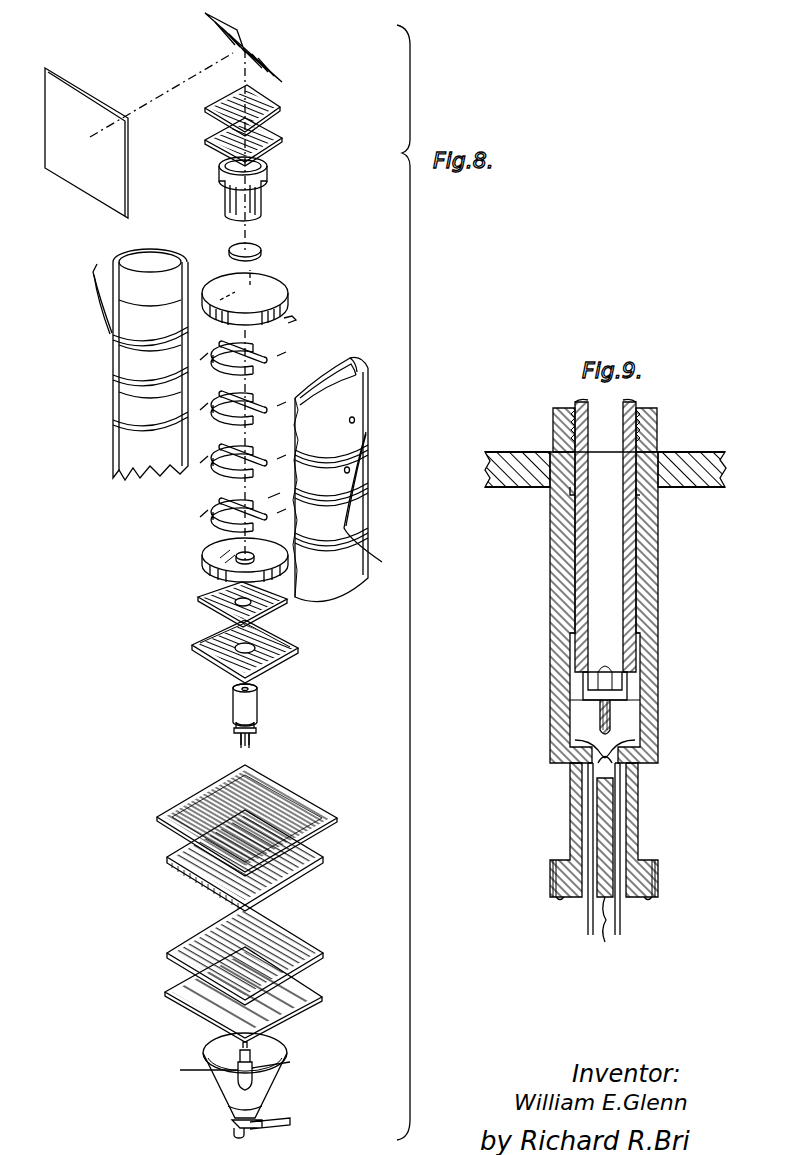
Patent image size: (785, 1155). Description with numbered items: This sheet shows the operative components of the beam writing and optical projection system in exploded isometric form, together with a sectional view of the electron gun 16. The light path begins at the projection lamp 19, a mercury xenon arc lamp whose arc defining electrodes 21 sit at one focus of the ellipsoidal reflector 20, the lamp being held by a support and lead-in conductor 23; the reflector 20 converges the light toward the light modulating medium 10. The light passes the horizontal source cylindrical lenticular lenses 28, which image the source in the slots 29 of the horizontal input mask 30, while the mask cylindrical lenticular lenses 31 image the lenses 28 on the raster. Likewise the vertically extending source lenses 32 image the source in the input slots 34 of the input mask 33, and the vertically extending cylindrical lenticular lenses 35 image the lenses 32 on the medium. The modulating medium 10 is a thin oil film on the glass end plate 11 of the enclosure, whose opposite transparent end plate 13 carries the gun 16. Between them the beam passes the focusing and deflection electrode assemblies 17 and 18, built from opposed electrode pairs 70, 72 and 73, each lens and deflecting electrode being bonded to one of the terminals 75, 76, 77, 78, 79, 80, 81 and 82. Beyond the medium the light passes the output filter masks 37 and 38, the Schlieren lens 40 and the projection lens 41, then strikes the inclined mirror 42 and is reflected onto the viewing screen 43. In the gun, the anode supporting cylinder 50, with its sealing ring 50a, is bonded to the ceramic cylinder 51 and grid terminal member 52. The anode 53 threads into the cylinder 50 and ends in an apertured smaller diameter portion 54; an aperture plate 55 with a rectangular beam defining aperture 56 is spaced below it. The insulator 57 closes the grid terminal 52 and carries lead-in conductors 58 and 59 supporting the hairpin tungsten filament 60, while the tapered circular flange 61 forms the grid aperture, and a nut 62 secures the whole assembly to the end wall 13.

In FIG. 8, the light modulating medium 10 is at (288, 326).
In FIG. 8, the glass end plate 11 is at (268, 283).
In FIG. 8, the transparent end plate 13 is at (225, 559).
In FIG. 8, the electron gun assembly 16 is at (224, 718).
In FIG. 9, the electron gun assembly 16 is at (530, 621).
In FIG. 8, the focusing and deflection electrode assembly 17 is at (255, 509).
In FIG. 8, the focusing and deflection electrode assembly 18 is at (256, 404).
In FIG. 8, the projection lamp 19 is at (270, 1080).
In FIG. 8, the ellipsoidal reflector 20 is at (262, 1085).
In FIG. 8, the arc defining electrodes 21 is at (285, 494).
In FIG. 8, the support and lead-in conductor 23 is at (270, 1126).
In FIG. 8, the horizontal source cylindrical lenticular lenses 28 is at (303, 996).
In FIG. 8, the slots 29 is at (280, 646).
In FIG. 8, the horizontal input mask 30 is at (241, 651).
In FIG. 8, the mask cylindrical lenticular lenses 31 is at (205, 601).
In FIG. 8, the vertically extending source lenses 32 is at (315, 951).
In FIG. 8, the input mask 33 is at (338, 821).
In FIG. 8, the input slots 34 is at (271, 820).
In FIG. 8, the vertically extending cylindrical lenticular lenses 35 is at (325, 858).
In FIG. 8, the output filter mask 37 is at (218, 153).
In FIG. 8, the output filter mask 38 is at (228, 106).
In FIG. 8, the Schlieren lens 40 is at (253, 247).
In FIG. 8, the projection lens 41 is at (267, 190).
In FIG. 8, the inclined mirror 42 is at (215, 38).
In FIG. 8, the viewing screen 43 is at (115, 106).
In FIG. 9, the anode supporting cylinder 50 is at (601, 581).
In FIG. 9, the sealing ring 50a is at (568, 492).
In FIG. 9, the ceramic cylinder 51 is at (655, 676).
In FIG. 9, the grid terminal member 52 is at (624, 865).
In FIG. 9, the anode 53 is at (648, 500).
In FIG. 9, the apertured smaller diameter portion 54 is at (613, 721).
In FIG. 9, the aperture plate 55 is at (594, 690).
In FIG. 9, the beam defining aperture 56 is at (606, 686).
In FIG. 9, the insulator 57 is at (606, 873).
In FIG. 8, the lead-in conductor 58 is at (238, 743).
In FIG. 9, the lead-in conductor 58 is at (587, 915).
In FIG. 8, the lead-in conductor 59 is at (253, 742).
In FIG. 9, the lead-in conductor 59 is at (622, 915).
In FIG. 9, the hairpin tungsten filament 60 is at (640, 737).
In FIG. 9, the circular flange 61 is at (563, 720).
In FIG. 9, the nut 62 is at (660, 424).
In FIG. 8, the electrode pair 70 is at (284, 557).
In FIG. 8, the electrode pair 72 is at (255, 453).
In FIG. 8, the electrode pair 73 is at (264, 362).
In FIG. 8, the terminal 75 is at (222, 521).
In FIG. 8, the terminal 76 is at (284, 516).
In FIG. 8, the terminal 77 is at (222, 464).
In FIG. 8, the terminal 78 is at (284, 462).
In FIG. 8, the terminal 79 is at (222, 410).
In FIG. 8, the terminal 80 is at (276, 427).
In FIG. 8, the terminal 81 is at (217, 353).
In FIG. 8, the terminal 82 is at (276, 378).